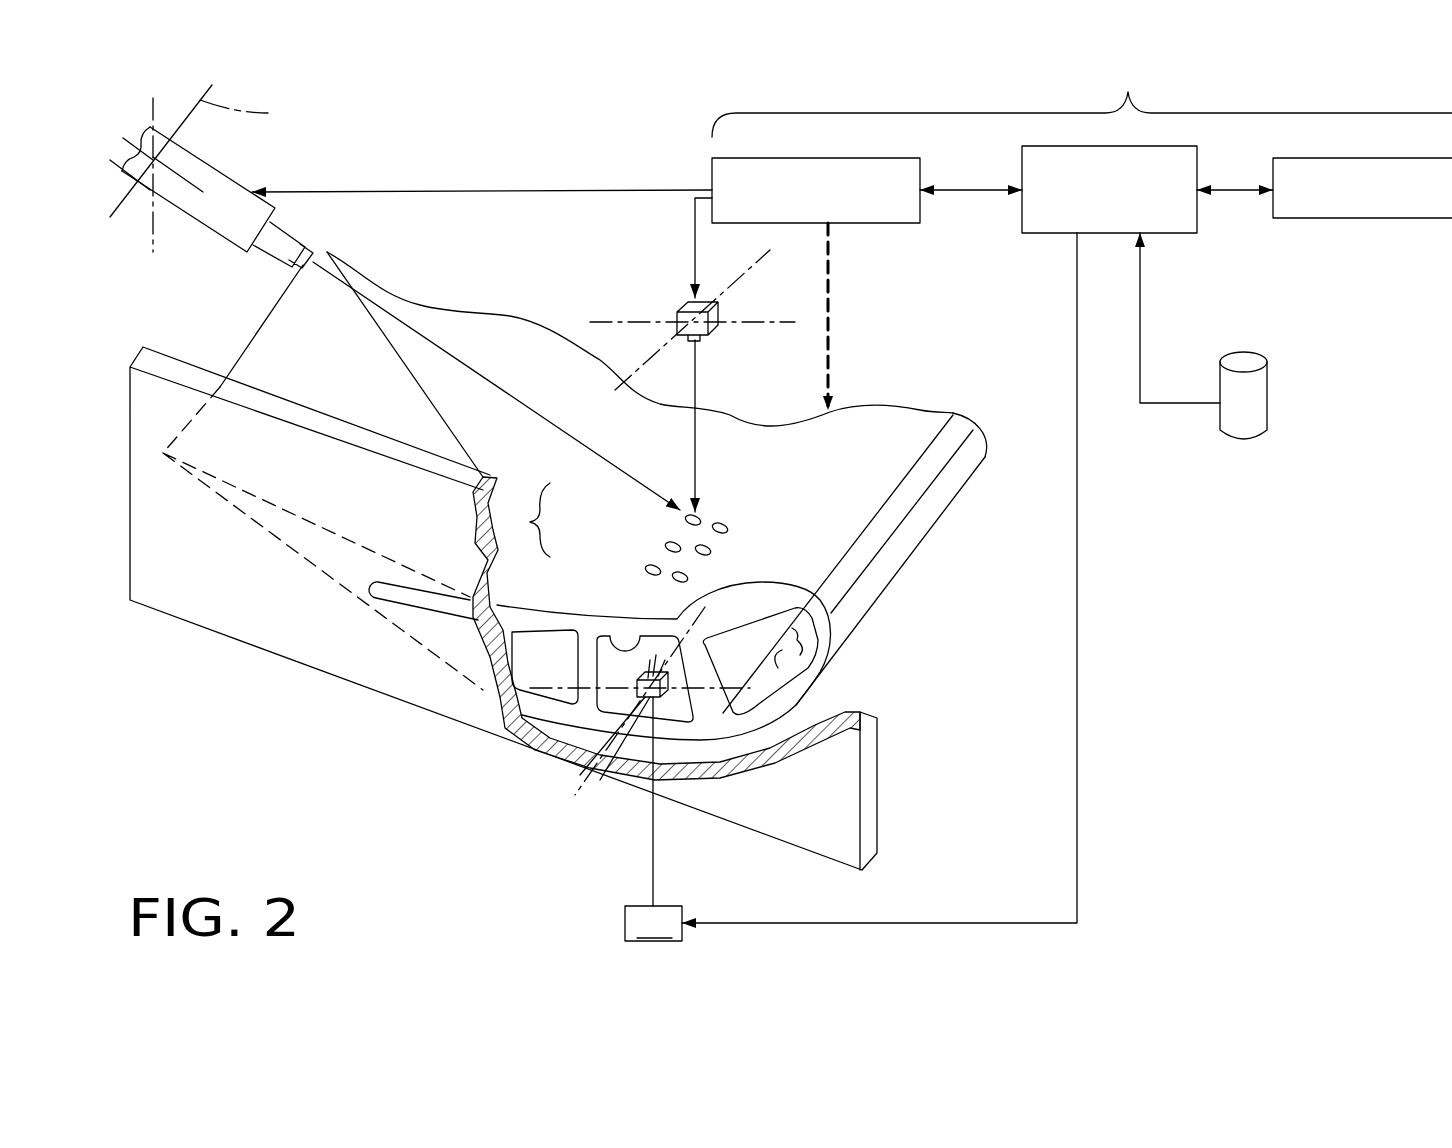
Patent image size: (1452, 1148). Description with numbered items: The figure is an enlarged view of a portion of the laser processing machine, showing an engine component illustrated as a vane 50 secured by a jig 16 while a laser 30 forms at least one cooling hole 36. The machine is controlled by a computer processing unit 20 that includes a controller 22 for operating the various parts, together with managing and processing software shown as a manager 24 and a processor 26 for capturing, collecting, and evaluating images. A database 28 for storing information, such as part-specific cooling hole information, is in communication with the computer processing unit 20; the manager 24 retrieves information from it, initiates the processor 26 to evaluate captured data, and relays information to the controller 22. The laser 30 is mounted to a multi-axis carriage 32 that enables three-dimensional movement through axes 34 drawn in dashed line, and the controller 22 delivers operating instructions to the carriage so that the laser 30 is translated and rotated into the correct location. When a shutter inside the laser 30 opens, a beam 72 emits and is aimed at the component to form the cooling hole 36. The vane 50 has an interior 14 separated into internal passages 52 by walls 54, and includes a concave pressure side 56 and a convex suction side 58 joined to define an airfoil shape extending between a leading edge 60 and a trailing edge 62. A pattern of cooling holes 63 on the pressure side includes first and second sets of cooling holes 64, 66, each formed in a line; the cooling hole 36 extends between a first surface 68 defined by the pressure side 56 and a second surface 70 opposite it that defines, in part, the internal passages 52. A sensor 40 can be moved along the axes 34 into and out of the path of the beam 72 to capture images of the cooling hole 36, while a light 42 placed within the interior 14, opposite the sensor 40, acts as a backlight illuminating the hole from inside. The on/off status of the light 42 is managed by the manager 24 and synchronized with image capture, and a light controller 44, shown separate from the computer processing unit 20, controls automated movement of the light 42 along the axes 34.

The interior 14 is at (800, 640).
The jig 16 is at (262, 628).
The computer processing unit 20 is at (1132, 90).
The controller 22 is at (858, 223).
The manager 24 is at (1155, 233).
The processor 26 is at (1325, 218).
The database 28 is at (1268, 395).
The laser 30 is at (232, 172).
The multi-axis carriage 32 is at (268, 113).
The axes 34 is at (753, 318).
The cooling hole 36 is at (717, 530).
The sensor 40 is at (678, 310).
The light 42 is at (648, 700).
The light controller 44 is at (653, 819).
The vane 50 is at (460, 278).
The internal passages 52 is at (487, 693).
The walls 54 is at (703, 603).
The pressure side 56 is at (718, 440).
The suction side 58 is at (755, 735).
The leading edge 60 is at (870, 568).
The trailing edge 62 is at (260, 330).
The pattern of cooling holes 63 is at (535, 485).
The first set of cooling holes 64 is at (647, 533).
The second set of cooling holes 66 is at (670, 565).
The first surface 68 is at (803, 469).
The second surface 70 is at (607, 637).
The beam 72 is at (478, 373).